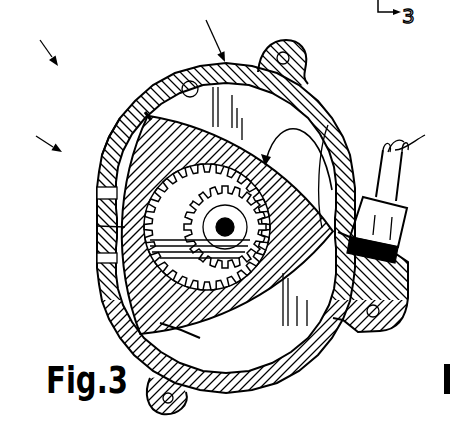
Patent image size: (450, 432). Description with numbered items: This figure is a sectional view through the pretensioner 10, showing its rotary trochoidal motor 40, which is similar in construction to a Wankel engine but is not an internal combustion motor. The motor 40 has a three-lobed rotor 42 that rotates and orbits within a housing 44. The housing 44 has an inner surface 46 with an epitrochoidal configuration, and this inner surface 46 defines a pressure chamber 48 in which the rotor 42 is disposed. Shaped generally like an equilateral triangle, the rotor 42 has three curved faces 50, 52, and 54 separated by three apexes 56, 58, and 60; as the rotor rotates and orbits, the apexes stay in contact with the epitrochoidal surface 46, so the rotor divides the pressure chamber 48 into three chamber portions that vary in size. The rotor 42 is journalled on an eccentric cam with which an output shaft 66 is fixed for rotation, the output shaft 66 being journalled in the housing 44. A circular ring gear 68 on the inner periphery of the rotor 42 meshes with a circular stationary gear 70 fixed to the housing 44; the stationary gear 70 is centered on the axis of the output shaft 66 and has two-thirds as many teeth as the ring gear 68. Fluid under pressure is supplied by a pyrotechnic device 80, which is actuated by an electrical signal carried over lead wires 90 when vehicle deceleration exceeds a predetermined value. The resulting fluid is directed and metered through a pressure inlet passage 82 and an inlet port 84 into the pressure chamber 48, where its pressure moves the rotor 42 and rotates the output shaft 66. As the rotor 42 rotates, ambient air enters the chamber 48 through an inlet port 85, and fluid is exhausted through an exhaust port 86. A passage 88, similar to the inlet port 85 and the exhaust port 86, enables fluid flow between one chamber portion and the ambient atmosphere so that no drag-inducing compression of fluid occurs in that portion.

The pretensioner 10 is at (36, 40).
The rotary trochoidal motor 40 is at (36, 133).
The three-lobed rotor 42 is at (320, 160).
The housing 44 is at (205, 31).
The inner surface 46 is at (185, 82).
The pressure chamber 48 is at (188, 112).
The curved face 50 is at (296, 188).
The curved face 52 is at (128, 163).
The curved face 54 is at (198, 315).
The apex 56 is at (335, 185).
The apex 58 is at (143, 118).
The apex 60 is at (185, 338).
The output shaft 66 is at (248, 298).
The ring gear 68 is at (110, 226).
The stationary gear 70 is at (152, 282).
The pyrotechnic device 80 is at (404, 210).
The pressure inlet passage 82 is at (380, 308).
The inlet port 84 is at (320, 330).
The inlet port 85 is at (97, 193).
The exhaust port 86 is at (100, 261).
The passage 88 is at (305, 100).
The lead wires 90 is at (393, 152).